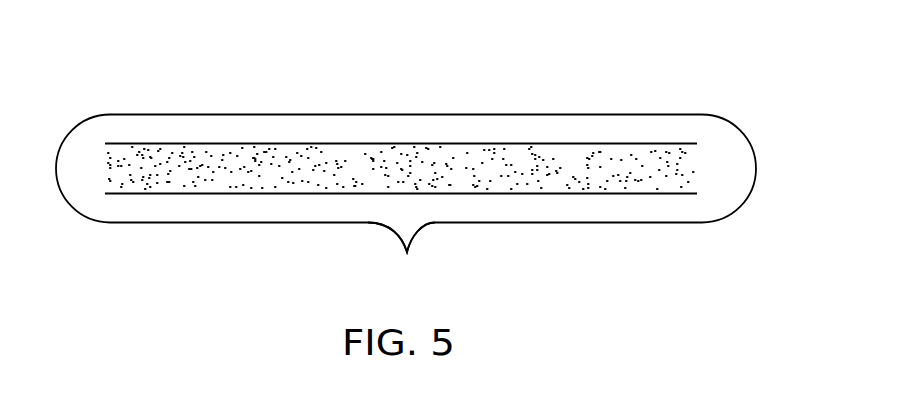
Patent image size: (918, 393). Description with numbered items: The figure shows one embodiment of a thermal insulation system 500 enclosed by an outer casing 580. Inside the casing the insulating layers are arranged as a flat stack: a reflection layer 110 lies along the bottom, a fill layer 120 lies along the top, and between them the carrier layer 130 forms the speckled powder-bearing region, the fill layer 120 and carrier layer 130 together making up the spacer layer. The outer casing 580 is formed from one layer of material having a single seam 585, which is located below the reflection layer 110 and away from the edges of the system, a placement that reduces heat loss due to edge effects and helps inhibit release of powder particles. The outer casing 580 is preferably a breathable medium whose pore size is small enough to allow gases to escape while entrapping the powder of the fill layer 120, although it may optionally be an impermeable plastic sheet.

The thermal insulation system 500 is at (434, 152).
The outer casing 580 is at (326, 115).
The seam 585 is at (407, 252).
The carrier layer 130 is at (502, 143).
The fill layer 120 is at (678, 166).
The reflection layer 110 is at (628, 195).